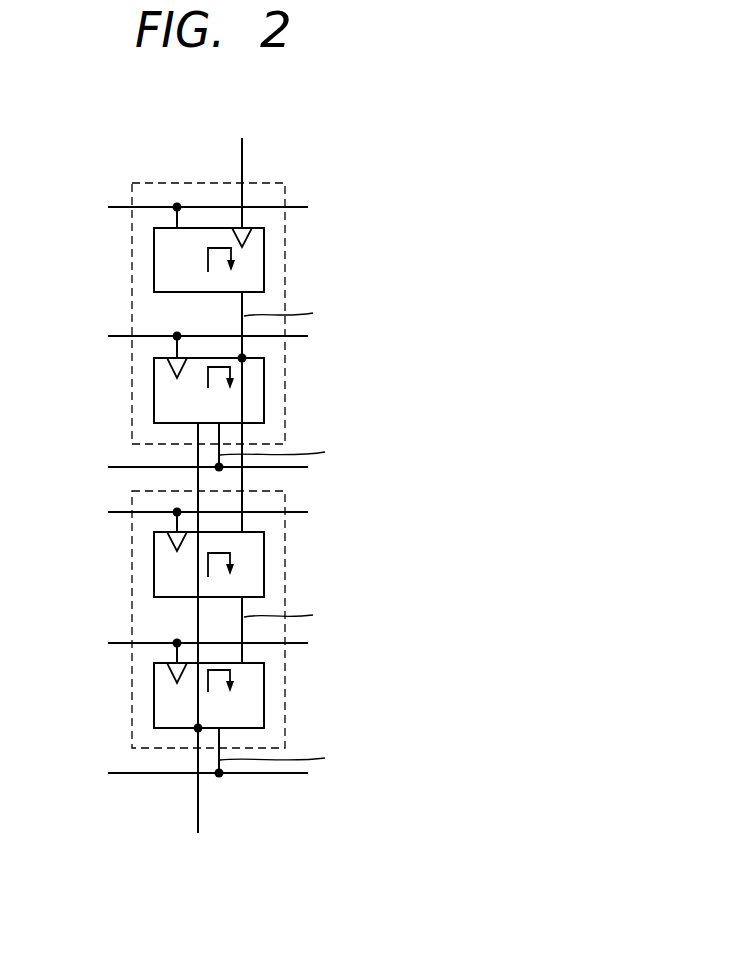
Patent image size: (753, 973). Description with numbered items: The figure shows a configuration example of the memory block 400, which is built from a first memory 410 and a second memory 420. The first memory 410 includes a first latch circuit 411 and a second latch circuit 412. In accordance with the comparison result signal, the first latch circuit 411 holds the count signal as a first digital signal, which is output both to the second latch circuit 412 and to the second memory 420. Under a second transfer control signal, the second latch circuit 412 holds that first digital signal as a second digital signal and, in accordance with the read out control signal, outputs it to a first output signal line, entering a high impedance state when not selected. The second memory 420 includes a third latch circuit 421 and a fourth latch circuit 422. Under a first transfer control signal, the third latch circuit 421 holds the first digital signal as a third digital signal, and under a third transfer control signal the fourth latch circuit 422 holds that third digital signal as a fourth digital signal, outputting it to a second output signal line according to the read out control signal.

The memory block 400 is at (337, 110).
The first memory 410 is at (132, 383).
The first latch circuit 411 is at (264, 255).
The second latch circuit 412 is at (264, 393).
The second memory 420 is at (132, 700).
The third latch circuit 421 is at (264, 560).
The fourth latch circuit 422 is at (264, 695).